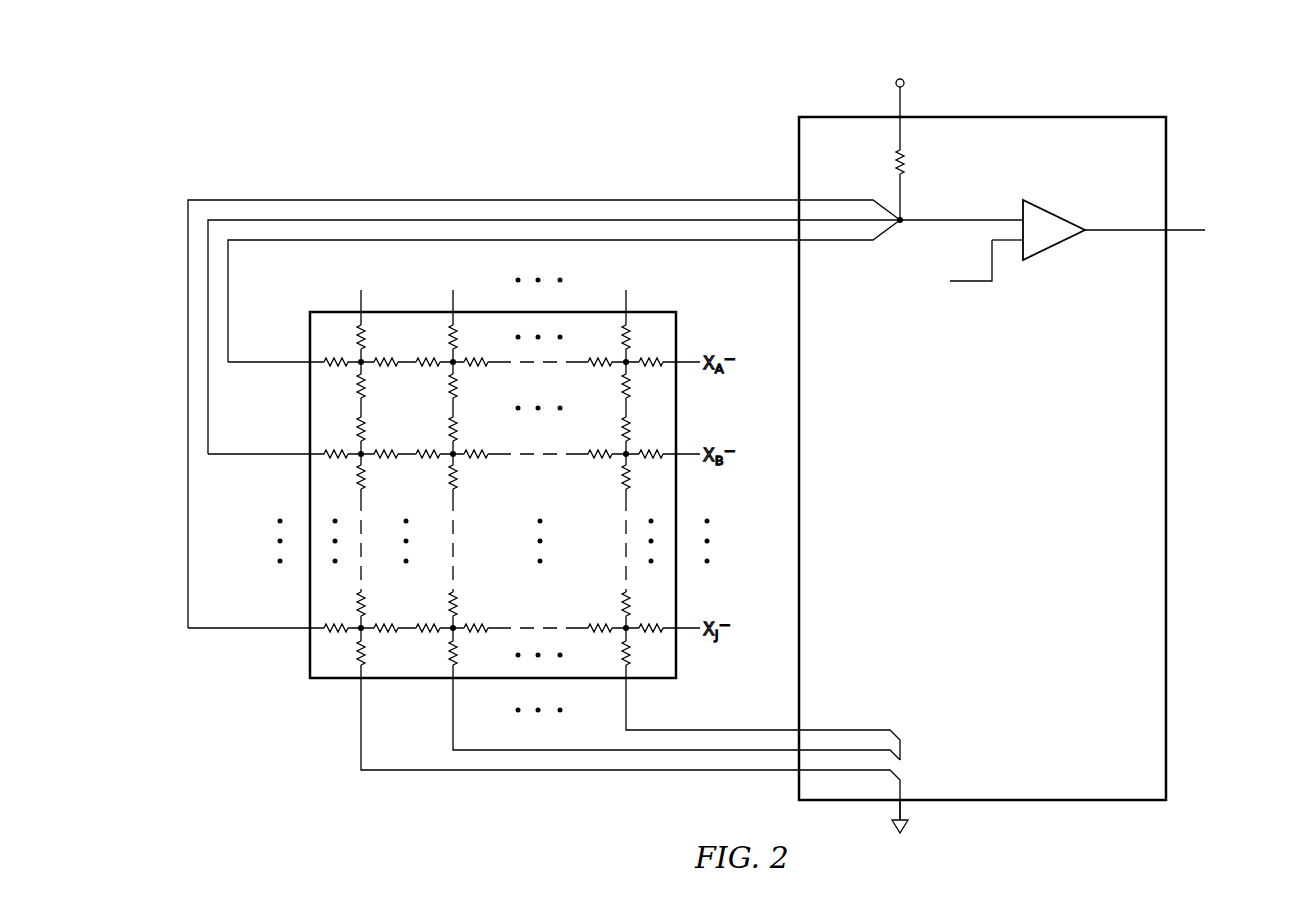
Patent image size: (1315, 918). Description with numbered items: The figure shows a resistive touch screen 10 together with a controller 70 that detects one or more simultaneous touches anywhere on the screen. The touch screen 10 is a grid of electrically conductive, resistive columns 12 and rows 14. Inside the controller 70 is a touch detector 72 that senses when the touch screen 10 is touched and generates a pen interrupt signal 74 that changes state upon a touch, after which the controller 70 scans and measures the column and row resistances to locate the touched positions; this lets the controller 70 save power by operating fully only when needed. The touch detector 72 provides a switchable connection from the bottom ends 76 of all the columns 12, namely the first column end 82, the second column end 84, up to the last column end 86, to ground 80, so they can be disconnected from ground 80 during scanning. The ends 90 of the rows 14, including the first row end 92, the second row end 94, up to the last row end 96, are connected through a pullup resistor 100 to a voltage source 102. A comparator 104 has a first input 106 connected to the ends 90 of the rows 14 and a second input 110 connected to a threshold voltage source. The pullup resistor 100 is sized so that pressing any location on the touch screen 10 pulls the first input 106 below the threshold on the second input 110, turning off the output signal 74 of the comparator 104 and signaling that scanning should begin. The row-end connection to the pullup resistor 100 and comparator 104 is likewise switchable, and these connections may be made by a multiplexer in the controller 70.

The touch screen 10 is at (676, 332).
The columns 12 is at (660, 272).
The rows 14 is at (273, 638).
The controller 70 is at (1167, 454).
The touch detector 72 is at (1065, 185).
The signal /PENIRQ 74 is at (1187, 228).
The ends of the columns 76 is at (678, 710).
The ground 80 is at (903, 829).
The column end YA− 82 is at (360, 736).
The column end YB− 84 is at (452, 732).
The column end YK− 86 is at (625, 716).
The ends of the rows 90 is at (278, 322).
The row end XA+ 92 is at (258, 366).
The row end XB+ 94 is at (238, 457).
The row end XJ+ 96 is at (228, 631).
The pullup resistor 100 is at (897, 164).
The voltage source 102 is at (897, 107).
The comparator 104 is at (1052, 250).
The first input 106 is at (982, 219).
The second input 110 is at (969, 286).